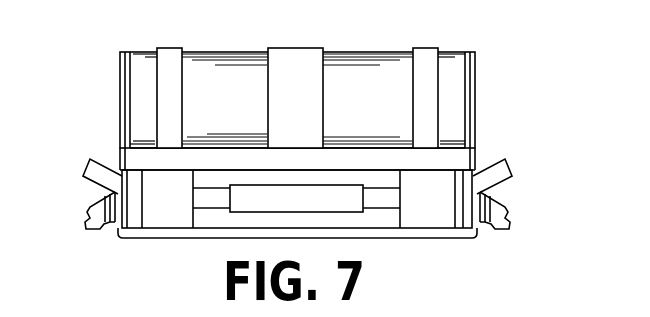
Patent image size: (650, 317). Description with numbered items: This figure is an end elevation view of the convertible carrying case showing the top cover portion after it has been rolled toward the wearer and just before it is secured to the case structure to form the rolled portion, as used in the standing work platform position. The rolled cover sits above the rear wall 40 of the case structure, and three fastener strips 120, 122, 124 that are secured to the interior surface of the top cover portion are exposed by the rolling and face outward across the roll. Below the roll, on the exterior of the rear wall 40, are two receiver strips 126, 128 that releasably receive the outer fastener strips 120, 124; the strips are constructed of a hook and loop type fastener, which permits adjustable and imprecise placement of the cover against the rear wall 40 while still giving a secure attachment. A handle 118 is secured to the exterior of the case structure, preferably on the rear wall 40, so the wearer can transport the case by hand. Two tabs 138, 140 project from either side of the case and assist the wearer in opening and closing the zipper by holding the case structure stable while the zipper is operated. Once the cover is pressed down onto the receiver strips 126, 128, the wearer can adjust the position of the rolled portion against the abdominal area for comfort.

The rear wall 40 is at (215, 220).
The handle 118 is at (345, 196).
The fastener strip 120 is at (427, 48).
The fastener strip 122 is at (297, 52).
The fastener strip 124 is at (165, 55).
The receiver strip 126 is at (445, 215).
The receiver strip 128 is at (160, 217).
The tab 138 is at (97, 160).
The tab 140 is at (500, 160).